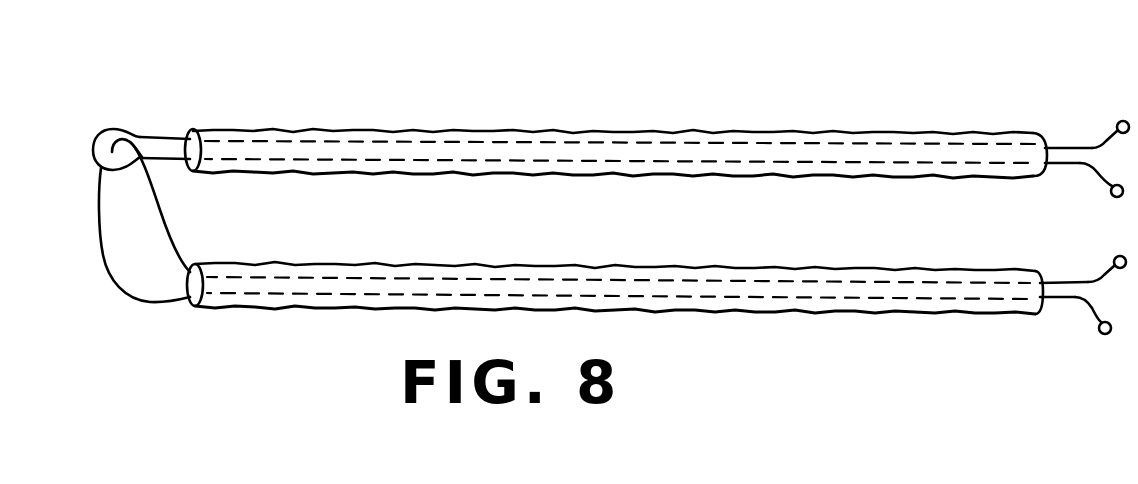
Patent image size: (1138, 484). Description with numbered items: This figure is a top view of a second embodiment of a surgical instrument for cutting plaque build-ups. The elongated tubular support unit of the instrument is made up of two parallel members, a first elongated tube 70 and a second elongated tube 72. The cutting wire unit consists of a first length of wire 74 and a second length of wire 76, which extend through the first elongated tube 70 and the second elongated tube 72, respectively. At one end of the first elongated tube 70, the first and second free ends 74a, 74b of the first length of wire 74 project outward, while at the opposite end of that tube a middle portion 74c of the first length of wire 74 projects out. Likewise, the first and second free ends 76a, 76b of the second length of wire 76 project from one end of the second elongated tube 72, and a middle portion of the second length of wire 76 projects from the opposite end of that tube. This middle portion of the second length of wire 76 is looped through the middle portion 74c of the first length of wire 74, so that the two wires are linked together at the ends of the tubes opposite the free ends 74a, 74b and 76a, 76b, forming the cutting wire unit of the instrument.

The first elongated tube 70 is at (718, 131).
The second elongated tube 72 is at (800, 312).
The first length of wire 74 is at (172, 178).
The first free end of the first length of wire 74a is at (1117, 123).
The second free end of the first length of wire 74b is at (1110, 194).
The middle portion of the first length of wire 74c is at (133, 137).
The second length of wire 76 is at (172, 310).
The first free end of the second length of wire 76a is at (1116, 257).
The second free end of the second length of wire 76b is at (1100, 333).